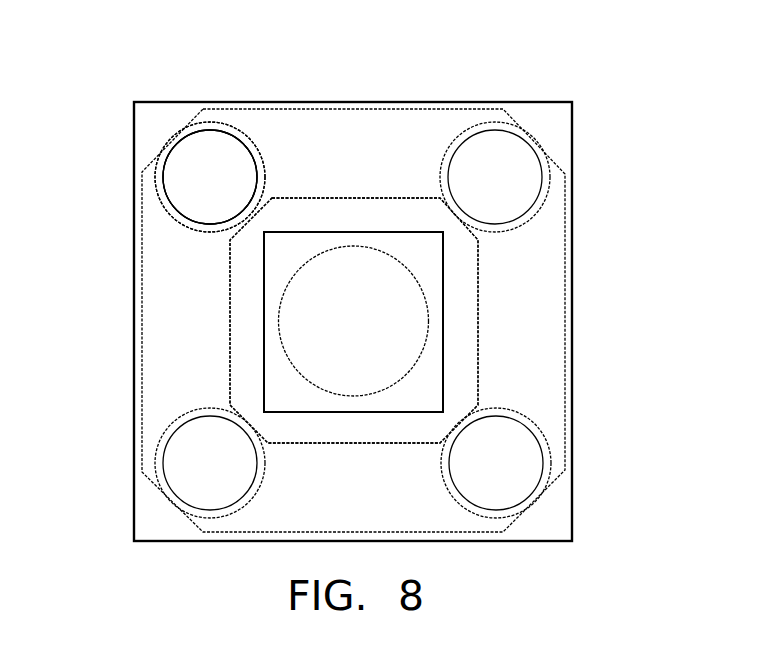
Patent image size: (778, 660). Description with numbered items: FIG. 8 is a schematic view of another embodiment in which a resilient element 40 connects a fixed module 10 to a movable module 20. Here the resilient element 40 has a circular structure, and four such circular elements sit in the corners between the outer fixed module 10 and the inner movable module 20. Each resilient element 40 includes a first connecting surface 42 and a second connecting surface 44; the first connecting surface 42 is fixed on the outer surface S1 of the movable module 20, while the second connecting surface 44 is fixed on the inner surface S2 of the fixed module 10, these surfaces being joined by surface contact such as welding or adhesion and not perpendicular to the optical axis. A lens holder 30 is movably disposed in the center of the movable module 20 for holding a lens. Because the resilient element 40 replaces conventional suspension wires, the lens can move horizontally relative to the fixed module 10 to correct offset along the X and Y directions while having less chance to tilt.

The fixed module 10 is at (558, 138).
The movable module 20 is at (353, 213).
The lens holder 30 is at (422, 259).
The resilient element 40 is at (548, 197).
The first connecting surface 42 is at (247, 222).
The second connecting surface 44 is at (168, 182).
The outer surface S1 is at (267, 222).
The inner surface S2 is at (178, 182).